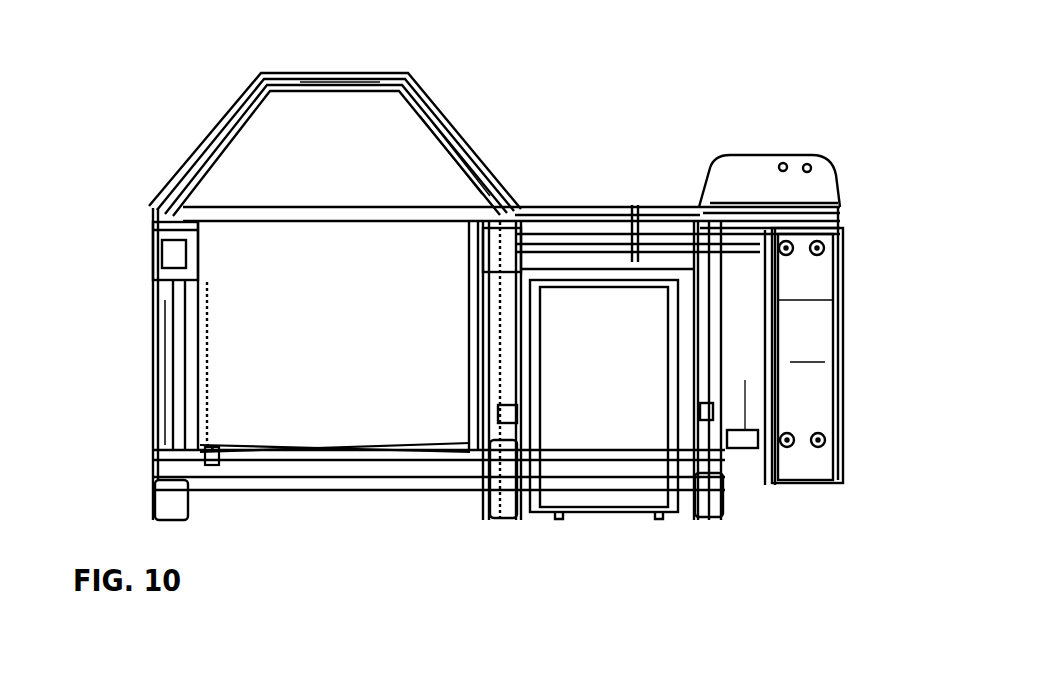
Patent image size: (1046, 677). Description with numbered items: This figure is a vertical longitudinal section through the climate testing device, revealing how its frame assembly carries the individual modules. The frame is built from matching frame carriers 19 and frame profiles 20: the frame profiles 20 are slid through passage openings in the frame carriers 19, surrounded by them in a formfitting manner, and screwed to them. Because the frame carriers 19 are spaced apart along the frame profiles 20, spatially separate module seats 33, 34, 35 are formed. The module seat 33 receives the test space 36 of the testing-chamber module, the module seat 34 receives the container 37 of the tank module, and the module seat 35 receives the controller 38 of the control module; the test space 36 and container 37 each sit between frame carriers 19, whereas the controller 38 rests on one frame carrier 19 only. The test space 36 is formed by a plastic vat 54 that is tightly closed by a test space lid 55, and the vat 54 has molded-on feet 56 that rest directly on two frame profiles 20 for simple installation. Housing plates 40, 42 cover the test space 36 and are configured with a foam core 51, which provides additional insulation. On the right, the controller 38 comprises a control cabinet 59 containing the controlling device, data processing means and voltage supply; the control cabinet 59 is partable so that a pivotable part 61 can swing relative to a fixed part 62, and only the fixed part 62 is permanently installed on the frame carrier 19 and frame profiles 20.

The frame carrier 19 is at (156, 455).
The frame profile 20 is at (492, 470).
The module seat 33 is at (334, 492).
The module seat 34 is at (604, 515).
The module seat 35 is at (787, 505).
The test space 36 is at (484, 126).
The container 37 is at (640, 222).
The controller 38 is at (770, 160).
The housing plate 40 is at (152, 300).
The housing plate 42 is at (436, 72).
The foam core 51 is at (484, 166).
The vat 54 is at (156, 214).
The test space lid 55 is at (452, 108).
The molded-on feet 56 is at (210, 462).
The control cabinet 59 is at (800, 333).
The pivotable part 61 is at (812, 397).
The fixed part 62 is at (735, 382).